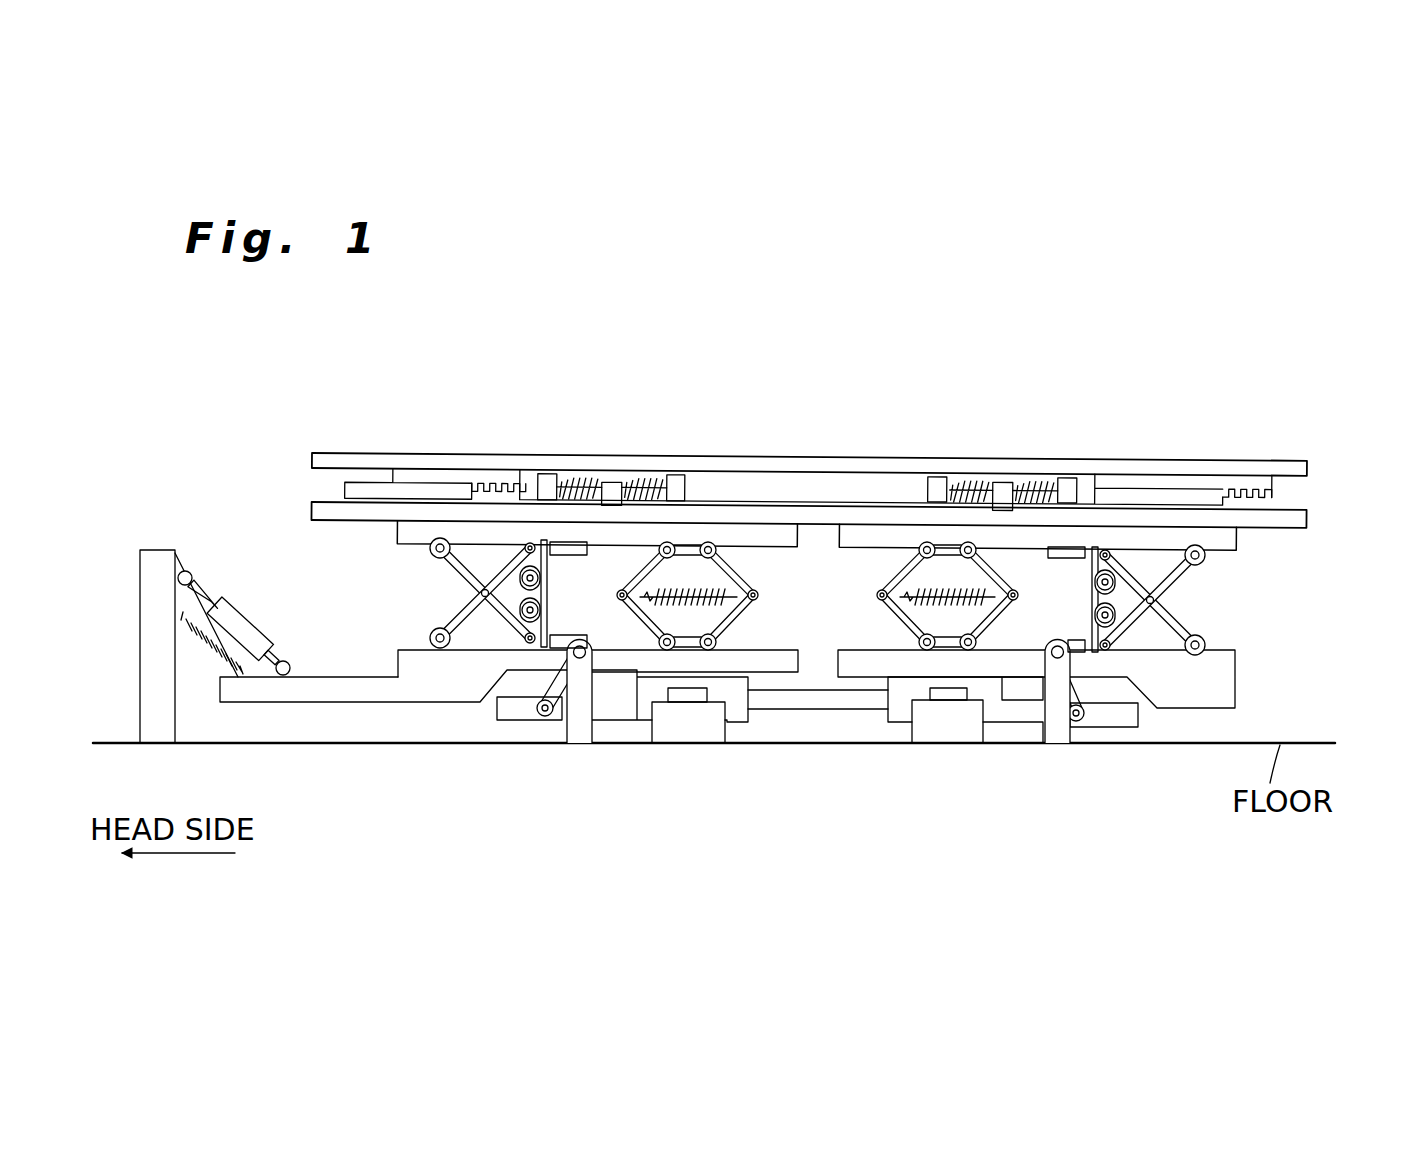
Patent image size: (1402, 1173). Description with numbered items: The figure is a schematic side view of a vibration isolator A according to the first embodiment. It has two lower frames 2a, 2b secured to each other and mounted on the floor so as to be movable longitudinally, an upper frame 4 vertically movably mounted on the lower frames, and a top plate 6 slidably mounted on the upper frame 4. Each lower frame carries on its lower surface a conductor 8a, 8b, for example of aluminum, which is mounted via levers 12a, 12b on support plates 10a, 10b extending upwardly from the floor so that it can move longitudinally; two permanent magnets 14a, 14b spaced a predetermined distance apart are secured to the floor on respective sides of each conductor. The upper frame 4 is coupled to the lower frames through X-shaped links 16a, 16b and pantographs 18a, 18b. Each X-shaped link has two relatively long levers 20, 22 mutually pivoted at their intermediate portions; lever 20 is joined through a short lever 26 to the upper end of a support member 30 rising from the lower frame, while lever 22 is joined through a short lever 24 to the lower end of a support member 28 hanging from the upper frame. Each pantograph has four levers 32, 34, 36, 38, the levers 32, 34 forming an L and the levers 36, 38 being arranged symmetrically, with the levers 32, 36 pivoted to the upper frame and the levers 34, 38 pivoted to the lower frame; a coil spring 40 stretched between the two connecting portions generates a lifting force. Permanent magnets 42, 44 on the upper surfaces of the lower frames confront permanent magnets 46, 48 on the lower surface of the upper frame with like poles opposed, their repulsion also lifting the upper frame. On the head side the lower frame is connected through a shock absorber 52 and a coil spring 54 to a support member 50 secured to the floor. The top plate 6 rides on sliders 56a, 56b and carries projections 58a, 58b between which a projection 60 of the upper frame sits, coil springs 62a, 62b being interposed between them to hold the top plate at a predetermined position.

The vibration isolator A is at (962, 398).
The lower frame 2a is at (418, 688).
The lower frame 2b is at (1175, 693).
The upper frame 4 is at (322, 507).
The top plate 6 is at (503, 466).
The conductor 8a is at (622, 713).
The conductor 8b is at (1012, 713).
The support plate 10a is at (578, 727).
The support plate 10b is at (1057, 722).
The lever 12a is at (528, 692).
The lever 12b is at (1095, 718).
The permanent magnet 14a is at (692, 690).
The permanent magnet 14b is at (950, 695).
The X-shaped link 16a is at (453, 529).
The X-shaped link 16b is at (1160, 600).
The pantograph 18a is at (746, 564).
The pantograph 18b is at (910, 529).
The lever 20 is at (440, 566).
The lever 22 is at (440, 620).
The lever 24 is at (542, 586).
The lever 26 is at (542, 612).
The support member 28 is at (528, 563).
The support member 30 is at (492, 640).
The lever 32 is at (880, 582).
The lever 34 is at (884, 617).
The lever 36 is at (1009, 584).
The lever 38 is at (1009, 620).
The coil spring 40 is at (884, 603).
The permanent magnet 42 is at (575, 633).
The permanent magnet 44 is at (1070, 640).
The permanent magnet 46 is at (587, 551).
The permanent magnet 48 is at (1072, 546).
The support member 50 is at (156, 550).
The shock absorber 52 is at (232, 612).
The coil spring 54 is at (212, 670).
The slider 56a is at (320, 485).
The slider 56b is at (1294, 492).
The projection 58a is at (546, 474).
The projection 58b is at (681, 474).
The projection 60 is at (613, 482).
The coil spring 62a is at (578, 480).
The coil spring 62b is at (649, 480).